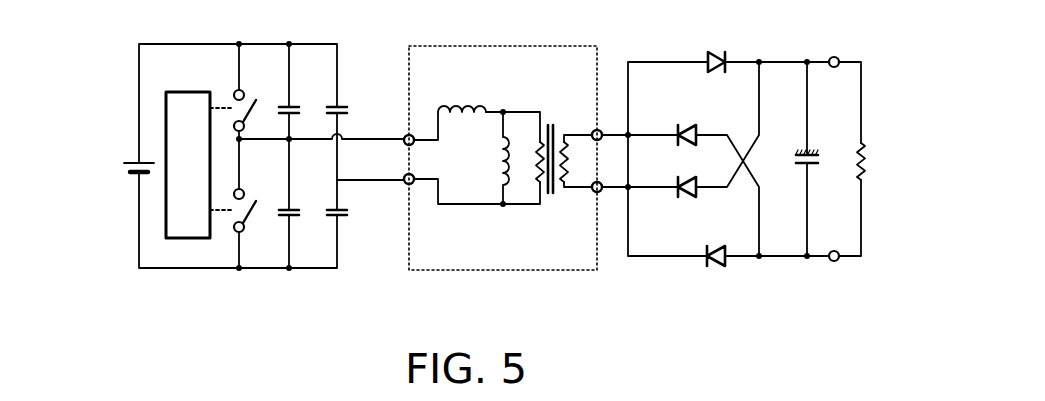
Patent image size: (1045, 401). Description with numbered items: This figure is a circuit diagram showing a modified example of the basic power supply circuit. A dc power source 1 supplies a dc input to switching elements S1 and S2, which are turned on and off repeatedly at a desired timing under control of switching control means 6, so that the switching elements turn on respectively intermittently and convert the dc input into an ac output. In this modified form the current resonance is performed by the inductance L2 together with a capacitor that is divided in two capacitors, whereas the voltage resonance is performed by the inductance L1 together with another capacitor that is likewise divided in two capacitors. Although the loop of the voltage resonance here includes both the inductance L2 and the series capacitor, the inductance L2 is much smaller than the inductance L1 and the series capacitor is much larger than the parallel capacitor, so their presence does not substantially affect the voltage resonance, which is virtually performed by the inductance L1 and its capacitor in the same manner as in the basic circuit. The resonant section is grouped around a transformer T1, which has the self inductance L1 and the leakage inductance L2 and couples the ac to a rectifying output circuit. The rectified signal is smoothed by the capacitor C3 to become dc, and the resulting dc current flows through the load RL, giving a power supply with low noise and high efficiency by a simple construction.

The dc power source 1 is at (136, 159).
The switching control means 6 is at (180, 238).
The switching element S1 is at (230, 105).
The switching element S2 is at (249, 208).
The inductance L1 is at (488, 158).
The inductance L2 is at (462, 95).
The transformer T1 is at (505, 182).
The capacitor C3 is at (797, 159).
The load RL is at (878, 161).